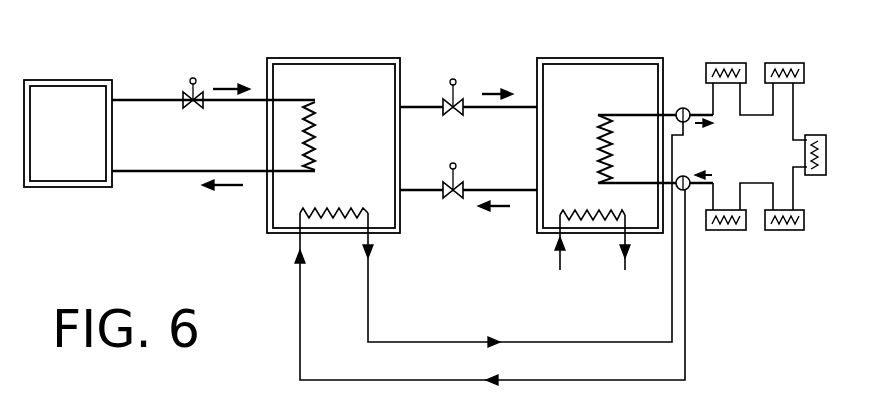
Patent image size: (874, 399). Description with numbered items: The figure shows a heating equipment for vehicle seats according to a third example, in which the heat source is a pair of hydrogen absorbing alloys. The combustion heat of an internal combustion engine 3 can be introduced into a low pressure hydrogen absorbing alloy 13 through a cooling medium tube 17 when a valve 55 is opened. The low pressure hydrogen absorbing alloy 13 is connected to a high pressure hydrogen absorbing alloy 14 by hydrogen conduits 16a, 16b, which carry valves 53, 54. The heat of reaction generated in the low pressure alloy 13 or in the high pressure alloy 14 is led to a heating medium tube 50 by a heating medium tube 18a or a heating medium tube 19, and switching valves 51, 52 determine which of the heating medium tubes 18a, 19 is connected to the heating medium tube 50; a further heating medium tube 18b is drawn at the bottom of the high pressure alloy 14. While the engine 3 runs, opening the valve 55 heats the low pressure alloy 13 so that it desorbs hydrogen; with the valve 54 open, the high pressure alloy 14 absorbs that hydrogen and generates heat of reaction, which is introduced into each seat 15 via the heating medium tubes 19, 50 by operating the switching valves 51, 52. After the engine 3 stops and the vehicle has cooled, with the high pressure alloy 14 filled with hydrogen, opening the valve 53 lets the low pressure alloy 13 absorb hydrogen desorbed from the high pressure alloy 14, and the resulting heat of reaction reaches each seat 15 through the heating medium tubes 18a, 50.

The internal combustion engine 3 is at (70, 95).
The cooling medium tube 17 is at (145, 99).
The valve 55 is at (200, 86).
The low pressure hydrogen absorbing alloy MH1 13 is at (330, 62).
The high pressure hydrogen absorbing alloy MH2 14 is at (618, 70).
The hydrogen conduit 16a is at (430, 196).
The hydrogen conduit 16b is at (425, 105).
The valve 53 is at (463, 185).
The valve 54 is at (460, 98).
The heating medium tube 19 is at (612, 112).
The heating medium tube 18a is at (298, 243).
The heater 18b is at (560, 266).
The switching valve 51 is at (688, 192).
The switching valve 52 is at (682, 107).
The heating medium tube 50 is at (793, 113).
The seat 15 is at (730, 63).